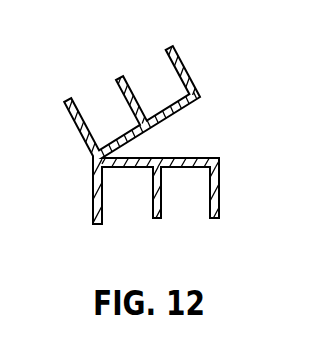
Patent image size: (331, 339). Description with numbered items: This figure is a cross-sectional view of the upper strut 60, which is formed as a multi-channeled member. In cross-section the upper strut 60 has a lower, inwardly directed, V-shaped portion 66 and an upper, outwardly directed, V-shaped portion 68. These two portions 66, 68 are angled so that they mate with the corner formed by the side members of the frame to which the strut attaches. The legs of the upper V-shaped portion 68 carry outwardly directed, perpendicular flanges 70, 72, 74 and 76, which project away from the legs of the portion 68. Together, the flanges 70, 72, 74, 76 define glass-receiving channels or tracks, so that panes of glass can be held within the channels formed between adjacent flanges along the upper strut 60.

The upper strut 60 is at (146, 60).
The lower, inwardly directed, V-shaped portion 66 is at (93, 185).
The upper, outwardly directed, V-shaped portion 68 is at (170, 159).
The flange 70 is at (128, 104).
The flange 72 is at (184, 66).
The flange 74 is at (152, 201).
The flange 76 is at (220, 203).